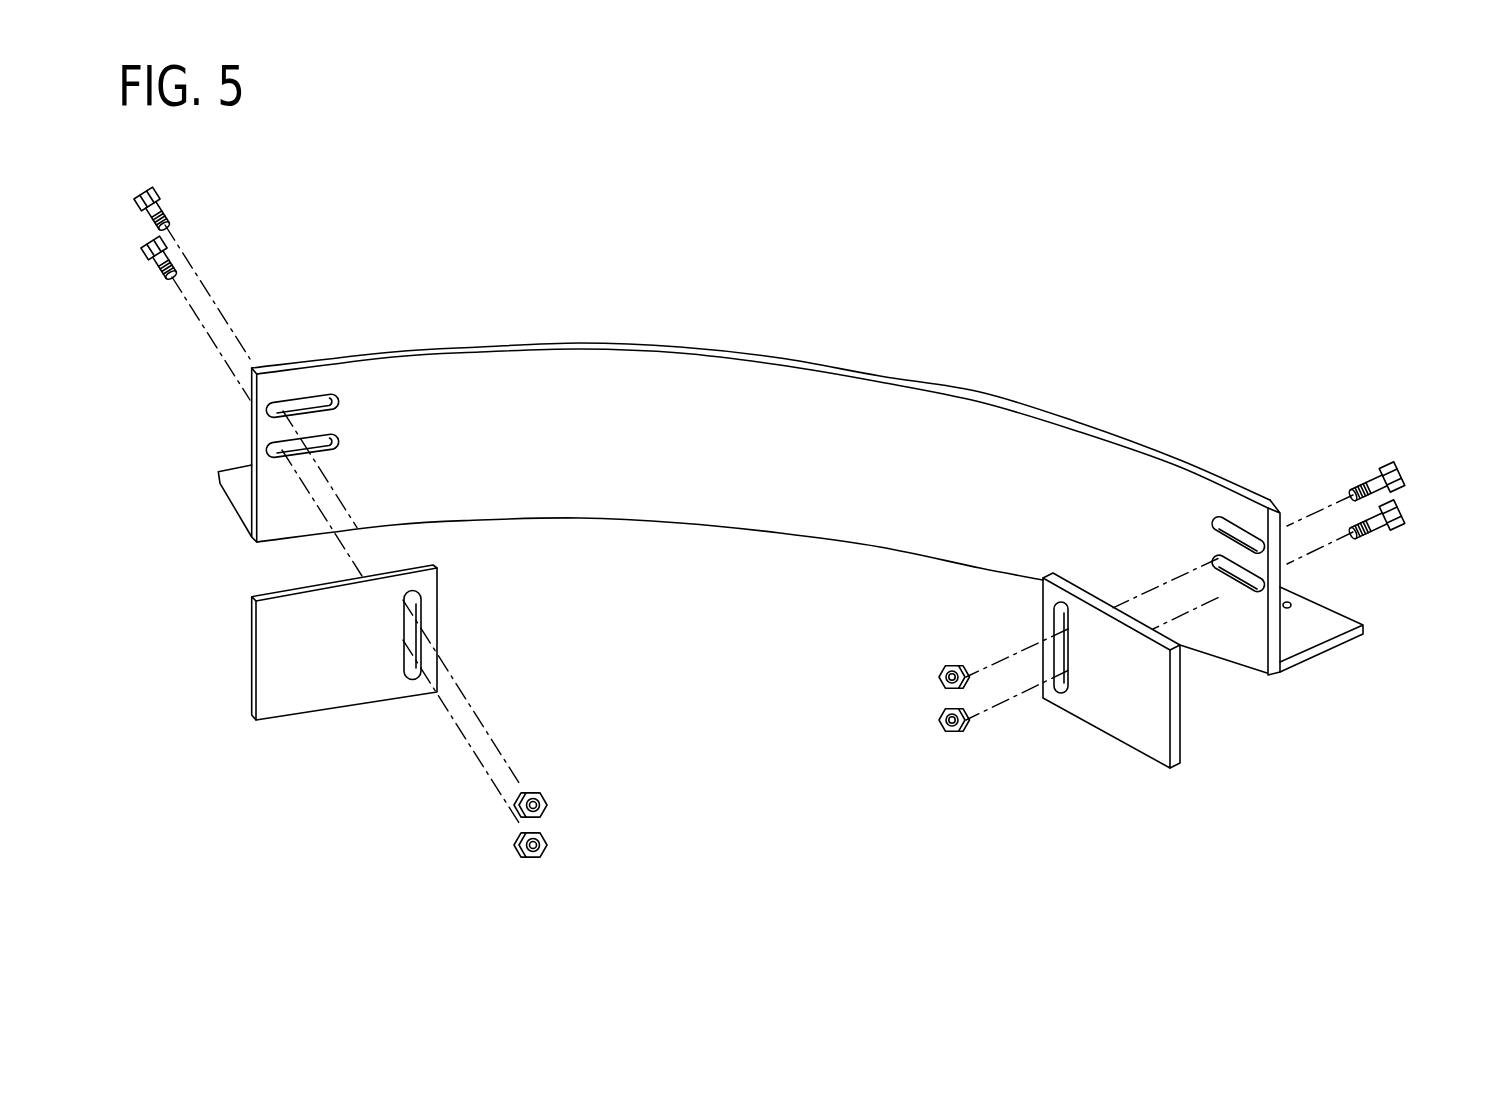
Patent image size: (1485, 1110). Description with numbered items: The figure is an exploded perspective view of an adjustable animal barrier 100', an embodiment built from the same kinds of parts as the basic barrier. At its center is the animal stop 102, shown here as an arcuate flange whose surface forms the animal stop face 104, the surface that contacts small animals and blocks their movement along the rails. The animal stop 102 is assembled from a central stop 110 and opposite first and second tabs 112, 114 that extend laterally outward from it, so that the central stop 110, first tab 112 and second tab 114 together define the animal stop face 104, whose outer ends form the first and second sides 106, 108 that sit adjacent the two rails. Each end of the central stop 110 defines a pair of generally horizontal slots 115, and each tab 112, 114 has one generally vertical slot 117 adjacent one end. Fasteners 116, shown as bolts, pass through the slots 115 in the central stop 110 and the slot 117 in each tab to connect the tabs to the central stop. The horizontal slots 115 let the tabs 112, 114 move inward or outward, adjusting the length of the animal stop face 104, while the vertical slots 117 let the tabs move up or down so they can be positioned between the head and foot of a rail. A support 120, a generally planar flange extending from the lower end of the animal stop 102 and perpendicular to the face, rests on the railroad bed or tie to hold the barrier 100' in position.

The animal barrier 100' is at (1225, 211).
The animal stop 102 is at (740, 347).
The animal stop face 104 is at (760, 455).
The first side 106 is at (253, 687).
The second side 108 is at (1180, 747).
The central stop 110 is at (952, 386).
The first tab 112 is at (302, 690).
The second tab 114 is at (1153, 738).
The slots 115 is at (313, 405).
The fasteners 116 is at (180, 197).
The slot 117 is at (412, 677).
The support 120 is at (1372, 645).